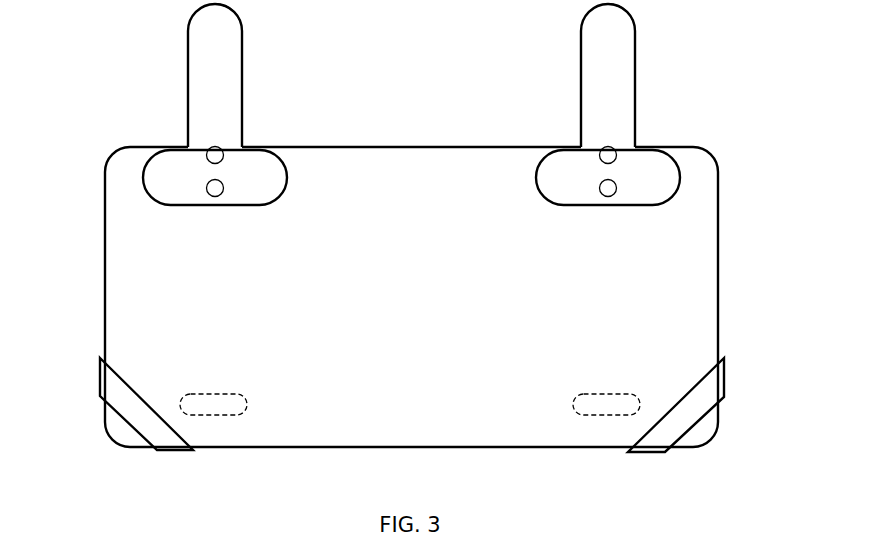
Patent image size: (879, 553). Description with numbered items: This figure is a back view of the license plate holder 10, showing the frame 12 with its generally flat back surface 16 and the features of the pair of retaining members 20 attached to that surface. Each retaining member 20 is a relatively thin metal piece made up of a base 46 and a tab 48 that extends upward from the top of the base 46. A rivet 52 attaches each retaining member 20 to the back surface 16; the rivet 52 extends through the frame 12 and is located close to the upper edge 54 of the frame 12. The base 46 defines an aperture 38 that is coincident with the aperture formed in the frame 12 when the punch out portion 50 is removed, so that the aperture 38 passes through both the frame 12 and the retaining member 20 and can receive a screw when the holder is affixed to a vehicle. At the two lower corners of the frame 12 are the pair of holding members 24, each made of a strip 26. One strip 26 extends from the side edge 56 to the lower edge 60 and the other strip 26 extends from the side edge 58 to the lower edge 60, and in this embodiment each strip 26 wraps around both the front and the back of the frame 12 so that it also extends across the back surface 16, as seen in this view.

The license plate holder 10 is at (733, 123).
The frame 12 is at (122, 308).
The back surface 16 is at (383, 180).
The retaining member 20 is at (203, 97).
The holding member 24 is at (105, 380).
The strip 26 is at (175, 449).
The aperture 38 is at (206, 188).
The base 46 is at (143, 182).
The tab 48 is at (230, 32).
The punch out portion 50 is at (210, 410).
The rivet 52 is at (223, 155).
The upper edge 54 is at (470, 146).
The side edge 56 is at (720, 290).
The side edge 58 is at (103, 265).
The lower edge 60 is at (333, 448).